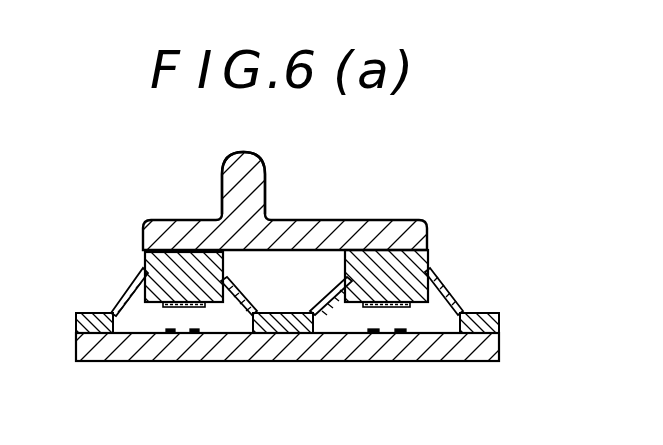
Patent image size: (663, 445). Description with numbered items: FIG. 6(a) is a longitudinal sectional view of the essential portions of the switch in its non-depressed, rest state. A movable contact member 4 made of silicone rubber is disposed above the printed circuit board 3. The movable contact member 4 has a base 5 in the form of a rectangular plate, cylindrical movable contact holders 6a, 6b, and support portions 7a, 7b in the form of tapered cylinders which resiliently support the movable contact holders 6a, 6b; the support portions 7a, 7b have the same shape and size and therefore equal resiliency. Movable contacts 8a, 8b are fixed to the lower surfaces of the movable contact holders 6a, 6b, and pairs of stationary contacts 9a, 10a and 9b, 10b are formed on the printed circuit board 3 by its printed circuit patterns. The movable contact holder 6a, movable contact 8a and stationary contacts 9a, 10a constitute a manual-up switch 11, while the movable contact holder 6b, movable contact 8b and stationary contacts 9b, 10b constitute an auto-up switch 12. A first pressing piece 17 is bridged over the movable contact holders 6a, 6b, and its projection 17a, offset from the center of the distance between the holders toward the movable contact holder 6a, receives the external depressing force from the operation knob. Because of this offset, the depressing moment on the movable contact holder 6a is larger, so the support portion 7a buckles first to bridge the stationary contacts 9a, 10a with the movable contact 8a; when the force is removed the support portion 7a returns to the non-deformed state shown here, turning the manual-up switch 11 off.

The printed circuit board 3 is at (499, 349).
The movable contact member 4 is at (487, 292).
The base 5 is at (499, 319).
The movable contact holder 6a is at (145, 254).
The movable contact holder 6b is at (428, 253).
The support portion 7a is at (140, 278).
The support portion 7b is at (443, 286).
The movable contact 8a is at (237, 291).
The movable contact 8b is at (326, 292).
The stationary contact 9a is at (170, 327).
The stationary contact 9b is at (363, 327).
The stationary contact 10a is at (232, 306).
The stationary contact 10b is at (427, 320).
The manual-up switch 11 is at (128, 323).
The auto-up switch 12 is at (430, 315).
The first pressing piece 17 is at (347, 220).
The projection 17a is at (267, 163).